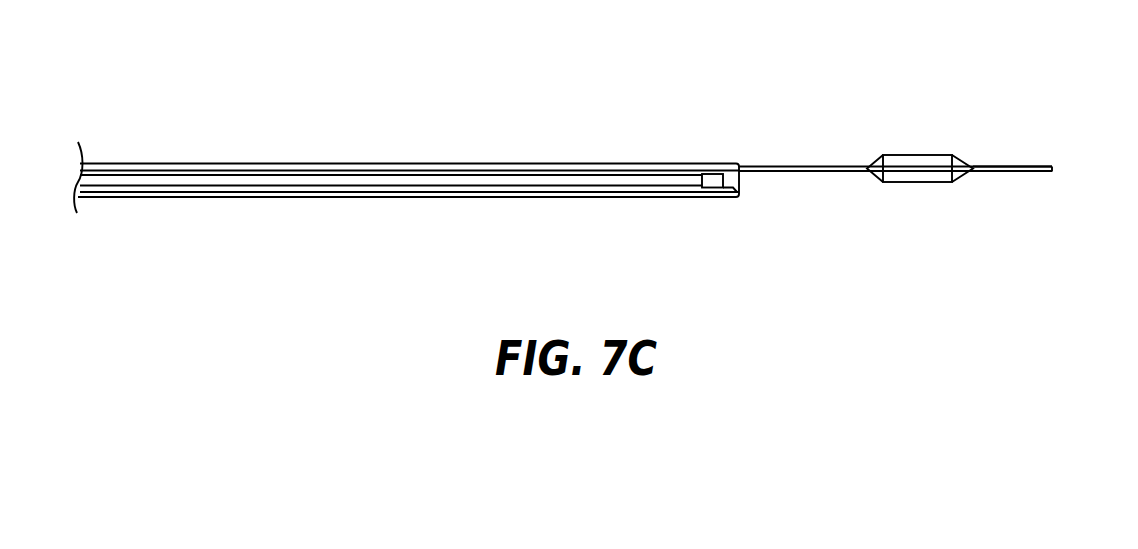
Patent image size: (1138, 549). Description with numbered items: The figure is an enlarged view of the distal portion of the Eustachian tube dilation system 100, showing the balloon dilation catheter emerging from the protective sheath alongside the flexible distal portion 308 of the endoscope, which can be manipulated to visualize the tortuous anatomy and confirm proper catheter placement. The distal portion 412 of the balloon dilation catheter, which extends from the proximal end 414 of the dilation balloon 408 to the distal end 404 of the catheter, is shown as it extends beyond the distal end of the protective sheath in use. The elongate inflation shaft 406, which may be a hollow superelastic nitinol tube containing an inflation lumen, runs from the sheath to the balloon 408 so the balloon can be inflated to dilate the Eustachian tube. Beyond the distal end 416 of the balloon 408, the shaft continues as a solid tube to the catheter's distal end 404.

The Eustachian tube dilation system 100 is at (507, 103).
The flexible distal portion of the endoscope 308 is at (663, 187).
The distal end of the balloon dilation catheter 404 is at (1052, 173).
The inflation shaft 406 is at (800, 166).
The inflatable balloon 408 is at (918, 155).
The distal portion of the balloon dilation catheter 412 is at (996, 143).
The proximal end of the dilation balloon 414 is at (866, 170).
The distal end of the balloon 416 is at (974, 170).